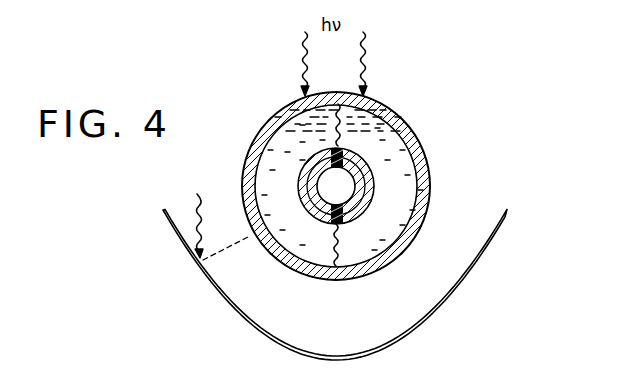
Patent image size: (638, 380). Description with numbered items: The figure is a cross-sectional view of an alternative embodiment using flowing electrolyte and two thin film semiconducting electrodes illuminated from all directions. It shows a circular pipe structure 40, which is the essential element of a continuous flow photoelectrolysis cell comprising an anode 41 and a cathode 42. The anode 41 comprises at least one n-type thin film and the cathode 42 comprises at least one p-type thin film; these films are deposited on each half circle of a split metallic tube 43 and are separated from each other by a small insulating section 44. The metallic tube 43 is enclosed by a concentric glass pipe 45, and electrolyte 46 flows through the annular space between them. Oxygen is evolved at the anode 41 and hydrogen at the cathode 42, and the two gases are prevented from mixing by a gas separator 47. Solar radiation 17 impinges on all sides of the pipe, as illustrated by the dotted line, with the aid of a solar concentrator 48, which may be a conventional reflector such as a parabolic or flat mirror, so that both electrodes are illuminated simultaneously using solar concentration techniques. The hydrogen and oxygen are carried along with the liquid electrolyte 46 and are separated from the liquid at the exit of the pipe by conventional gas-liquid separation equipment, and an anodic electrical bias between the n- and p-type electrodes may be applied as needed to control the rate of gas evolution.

The solar radiation 17 is at (302, 58).
The circular pipe structure 40 is at (420, 141).
The anode 41 is at (298, 183).
The cathode 42 is at (372, 188).
The split metallic tube 43 is at (358, 195).
The insulating section 44 is at (343, 150).
The concentric glass pipe 45 is at (416, 233).
The electrolyte 46 is at (366, 124).
The gas separator 47 is at (333, 254).
The solar concentrator 48 is at (479, 269).